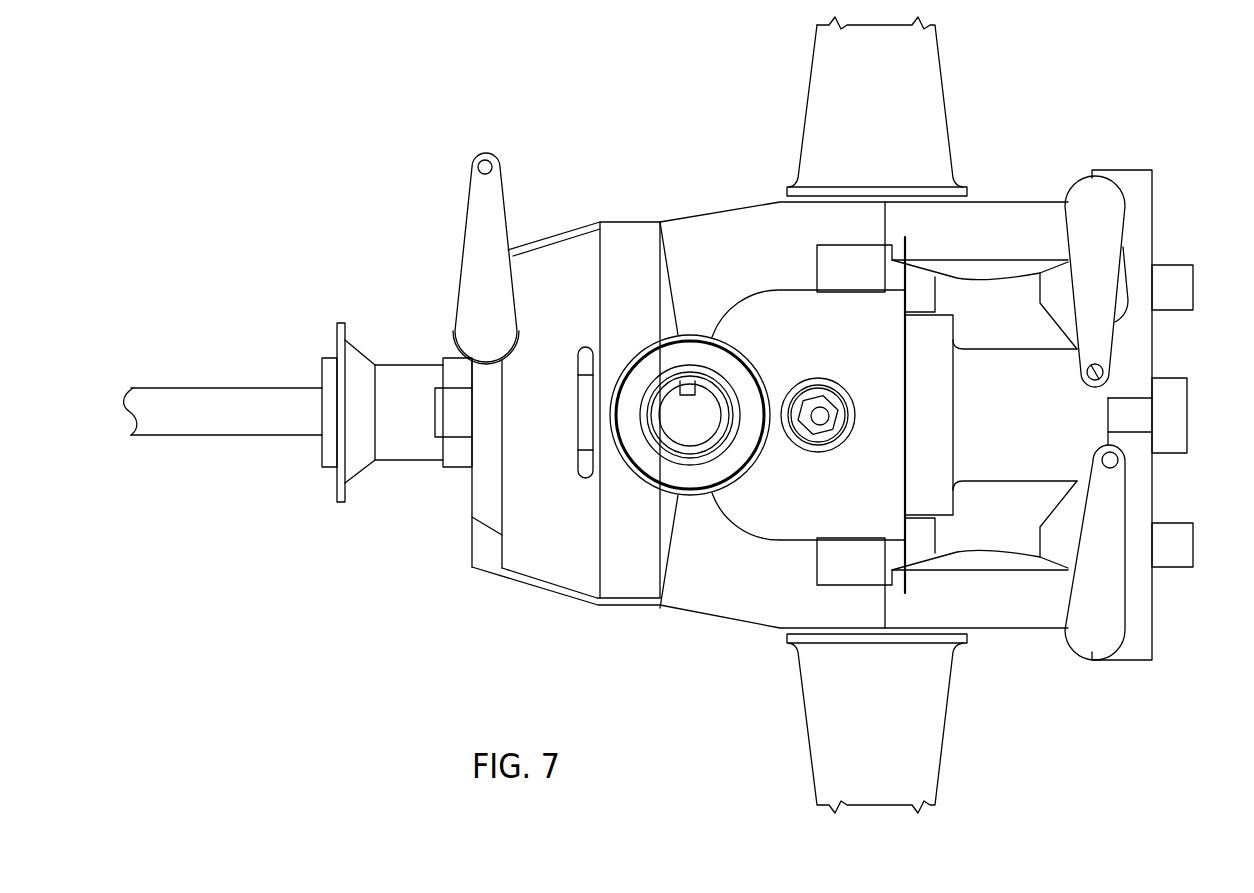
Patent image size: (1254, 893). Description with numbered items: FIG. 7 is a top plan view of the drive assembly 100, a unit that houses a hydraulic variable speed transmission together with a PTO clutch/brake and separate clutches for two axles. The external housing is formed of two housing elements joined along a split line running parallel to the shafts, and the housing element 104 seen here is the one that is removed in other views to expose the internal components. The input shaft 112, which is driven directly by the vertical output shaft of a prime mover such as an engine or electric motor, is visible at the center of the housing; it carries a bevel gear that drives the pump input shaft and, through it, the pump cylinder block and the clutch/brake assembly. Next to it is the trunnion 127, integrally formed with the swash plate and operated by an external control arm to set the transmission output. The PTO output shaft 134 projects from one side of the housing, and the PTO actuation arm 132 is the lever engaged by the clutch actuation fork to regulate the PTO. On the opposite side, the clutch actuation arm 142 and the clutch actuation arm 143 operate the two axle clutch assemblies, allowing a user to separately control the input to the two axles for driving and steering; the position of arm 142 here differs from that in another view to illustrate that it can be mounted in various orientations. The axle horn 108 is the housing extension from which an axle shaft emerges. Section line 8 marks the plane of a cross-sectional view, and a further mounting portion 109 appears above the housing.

The drive assembly 100 is at (252, 96).
The housing element 104 is at (750, 259).
The axle horn 108 is at (893, 727).
The upper mounting leg 109 is at (891, 129).
The input shaft 112 is at (722, 427).
The trunnion 127 is at (817, 410).
The PTO actuation arm 132 is at (501, 291).
The PTO output shaft 134 is at (253, 421).
The clutch actuation arm 142 is at (1115, 587).
The clutch actuation arm 143 is at (1111, 264).
The section line 8- 8 is at (905, 237).